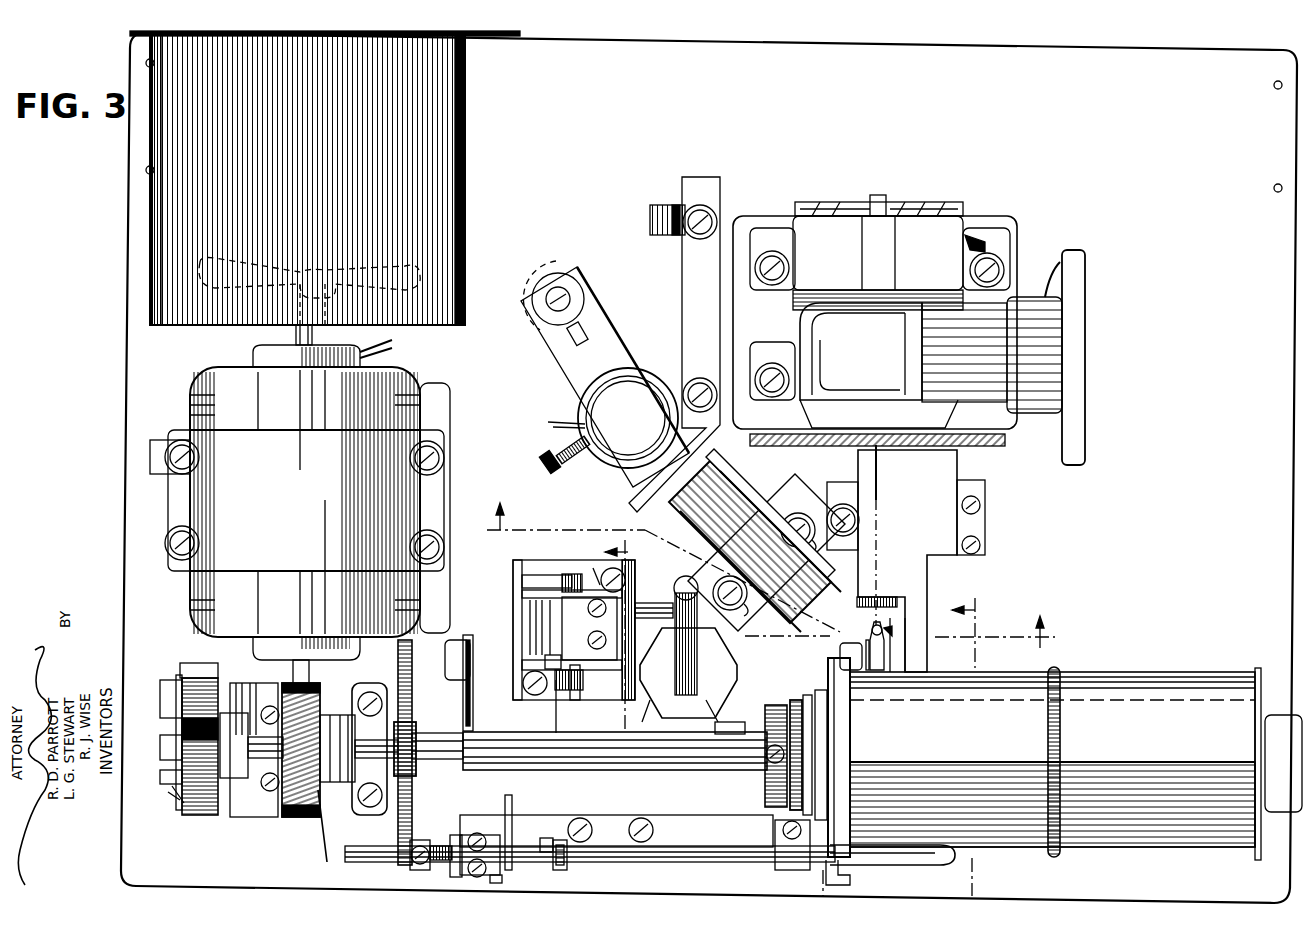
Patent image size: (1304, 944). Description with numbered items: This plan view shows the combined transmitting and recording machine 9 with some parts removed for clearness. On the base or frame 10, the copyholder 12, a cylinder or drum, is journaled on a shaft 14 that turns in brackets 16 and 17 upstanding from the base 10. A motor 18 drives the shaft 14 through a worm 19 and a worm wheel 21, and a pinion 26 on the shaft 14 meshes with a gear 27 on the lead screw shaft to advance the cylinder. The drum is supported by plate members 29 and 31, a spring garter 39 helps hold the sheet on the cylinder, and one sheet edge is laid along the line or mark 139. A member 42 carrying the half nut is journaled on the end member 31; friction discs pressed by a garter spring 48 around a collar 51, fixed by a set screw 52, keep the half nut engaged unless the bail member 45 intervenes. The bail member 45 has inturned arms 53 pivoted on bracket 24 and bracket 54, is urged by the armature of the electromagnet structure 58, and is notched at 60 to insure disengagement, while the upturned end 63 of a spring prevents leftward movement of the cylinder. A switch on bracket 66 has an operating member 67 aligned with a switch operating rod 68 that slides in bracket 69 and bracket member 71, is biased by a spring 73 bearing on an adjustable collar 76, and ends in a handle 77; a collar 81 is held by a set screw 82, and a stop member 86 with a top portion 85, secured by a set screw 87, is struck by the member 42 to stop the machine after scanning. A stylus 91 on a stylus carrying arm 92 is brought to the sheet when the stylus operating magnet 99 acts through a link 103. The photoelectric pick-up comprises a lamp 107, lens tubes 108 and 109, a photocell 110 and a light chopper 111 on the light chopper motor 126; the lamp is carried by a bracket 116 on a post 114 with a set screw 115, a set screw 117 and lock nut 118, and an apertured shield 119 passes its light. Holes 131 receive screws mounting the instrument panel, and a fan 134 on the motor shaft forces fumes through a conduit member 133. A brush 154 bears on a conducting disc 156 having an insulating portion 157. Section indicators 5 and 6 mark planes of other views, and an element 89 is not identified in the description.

The section line 5- 5 is at (995, 747).
The section line 6- 6 is at (714, 718).
The combined transmitting and recording machine 9 is at (765, 575).
The base or frame 10 is at (142, 352).
The copyholder 12 is at (1150, 672).
The shaft 14 is at (617, 771).
The bracket 16 is at (1280, 812).
The bracket 17 is at (358, 684).
The motor 18 is at (200, 501).
The worm 19 is at (262, 768).
The worm wheel 21 is at (290, 795).
The bracket 24 is at (852, 640).
The pinion 26 is at (416, 724).
The gear 27 is at (413, 696).
The plate member 29 is at (1268, 654).
The plate member 31 is at (848, 730).
The spring garter 39 is at (1056, 668).
The member 42 is at (812, 684).
The bail member 45 is at (724, 728).
The garter spring 48 is at (792, 705).
The collar 51 is at (766, 795).
The set screw 52 is at (765, 748).
The inturned arms 53 is at (473, 698).
The bracket 54 is at (458, 640).
The electromagnet structure 58 is at (738, 657).
The notch 60 is at (504, 732).
The upturned end of spring 63 is at (790, 838).
The bracket 66 is at (258, 812).
The operating member 67 is at (318, 848).
The switch operating rod 68 is at (368, 860).
The bracket 69 is at (452, 870).
The bracket member 71 is at (850, 878).
The spring 73 is at (440, 845).
The adjustable collar 76 is at (412, 862).
The handle 77 is at (957, 858).
The collar 81 is at (566, 862).
The set screw 82 is at (556, 840).
The top portion 85 is at (513, 800).
The stop member 86 is at (496, 835).
The set screw 87 is at (500, 878).
The plate 89 is at (660, 816).
The stylus 91 is at (892, 644).
The stylus carrying arm 92 is at (884, 656).
The stylus operating magnet 99 is at (530, 627).
The link 103 is at (552, 712).
The lamp 107 is at (652, 385).
The lens tube 108 is at (720, 478).
The lens tube 109 is at (872, 608).
The photocell 110 is at (845, 305).
The light chopper 111 is at (836, 447).
The post 114 is at (530, 275).
The set screw 115 is at (548, 304).
The bracket 116 is at (560, 356).
The set screw 117 is at (552, 454).
The lock nut 118 is at (590, 458).
The apertured shield 119 is at (718, 304).
The light chopper motor 126 is at (800, 230).
The holes 131 is at (150, 166).
The conduit member 133 is at (466, 155).
The fan 134 is at (218, 258).
The line or mark 139 is at (1108, 762).
The brush 154 is at (192, 663).
The conducting disc 156 is at (208, 818).
The insulating portion 157 is at (198, 718).